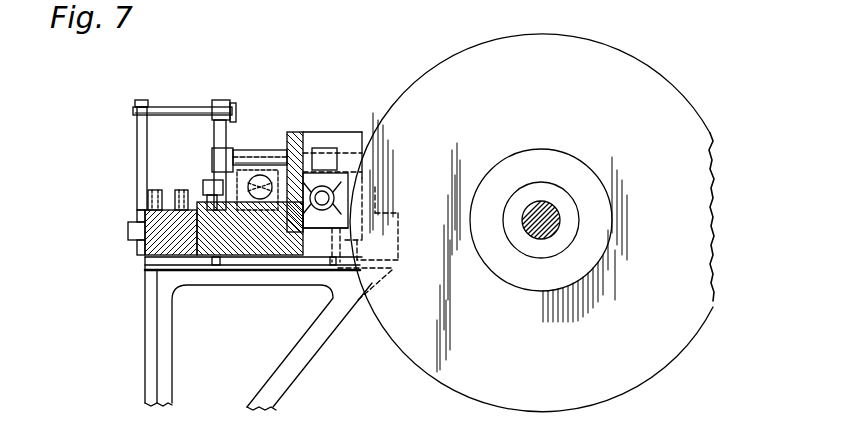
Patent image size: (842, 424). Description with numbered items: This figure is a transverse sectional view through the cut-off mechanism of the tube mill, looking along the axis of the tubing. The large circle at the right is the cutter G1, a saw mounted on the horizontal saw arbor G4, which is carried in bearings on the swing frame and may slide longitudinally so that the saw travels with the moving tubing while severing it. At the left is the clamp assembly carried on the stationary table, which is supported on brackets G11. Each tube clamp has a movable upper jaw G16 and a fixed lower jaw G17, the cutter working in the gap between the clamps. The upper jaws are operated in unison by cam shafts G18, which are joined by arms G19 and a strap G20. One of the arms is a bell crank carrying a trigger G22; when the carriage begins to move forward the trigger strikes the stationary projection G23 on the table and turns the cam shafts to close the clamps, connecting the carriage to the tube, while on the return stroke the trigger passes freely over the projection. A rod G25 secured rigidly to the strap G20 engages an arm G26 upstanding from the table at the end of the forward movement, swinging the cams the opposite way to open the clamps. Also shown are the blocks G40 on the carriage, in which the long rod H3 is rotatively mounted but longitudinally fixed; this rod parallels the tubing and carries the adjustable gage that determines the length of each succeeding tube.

The cutter G1 is at (567, 38).
The saw arbor G4 is at (537, 238).
The brackets G11 is at (153, 322).
The movable jaw G16 is at (338, 186).
The fixed jaw G17 is at (322, 224).
The cam shafts G18 is at (276, 150).
The arms G19 is at (216, 131).
The strap G20 is at (234, 105).
The trigger G22 is at (208, 182).
The projection G23 is at (145, 257).
The rod G25 is at (173, 107).
The arm G26 is at (138, 162).
The blocks G40 is at (255, 166).
The rod H3 is at (248, 235).